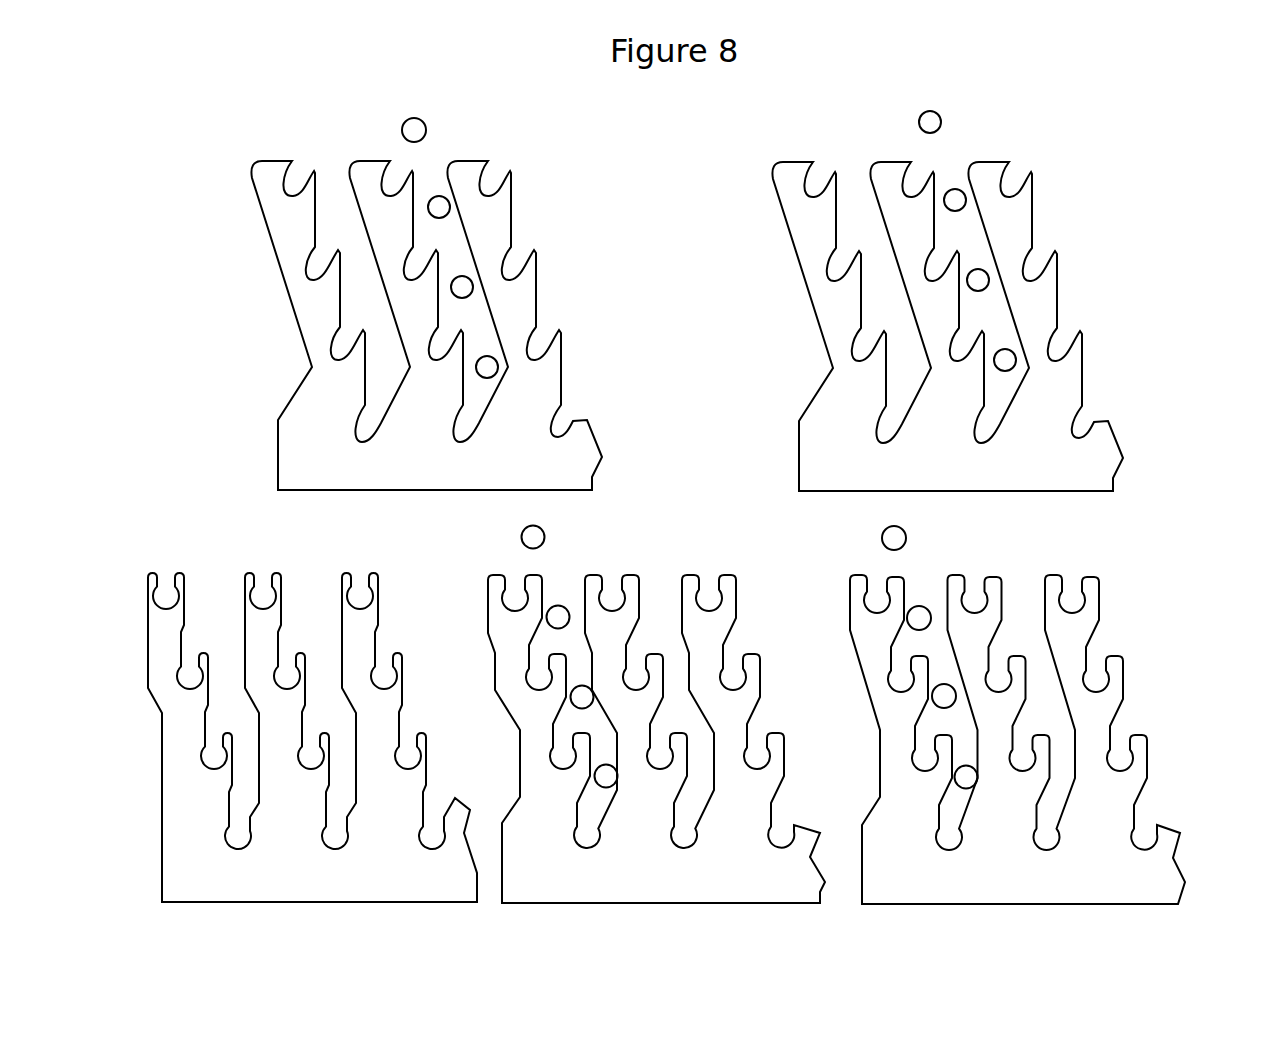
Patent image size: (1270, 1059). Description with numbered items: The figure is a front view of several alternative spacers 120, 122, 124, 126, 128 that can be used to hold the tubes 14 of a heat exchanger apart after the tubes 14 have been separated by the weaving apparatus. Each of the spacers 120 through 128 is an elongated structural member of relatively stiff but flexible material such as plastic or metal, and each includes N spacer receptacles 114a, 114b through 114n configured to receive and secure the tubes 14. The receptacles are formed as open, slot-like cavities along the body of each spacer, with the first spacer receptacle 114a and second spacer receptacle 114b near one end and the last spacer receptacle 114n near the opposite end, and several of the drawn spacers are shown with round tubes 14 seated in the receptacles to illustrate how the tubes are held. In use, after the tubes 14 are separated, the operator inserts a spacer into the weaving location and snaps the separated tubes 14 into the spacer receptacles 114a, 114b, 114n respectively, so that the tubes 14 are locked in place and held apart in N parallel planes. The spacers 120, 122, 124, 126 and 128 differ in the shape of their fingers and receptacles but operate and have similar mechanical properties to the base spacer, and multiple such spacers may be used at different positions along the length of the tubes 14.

The tubes 14 is at (413, 118).
The spacer receptacle 114a is at (488, 182).
The spacer receptacle 114b is at (513, 257).
The spacer receptacle 114n is at (562, 420).
The spacer 120 is at (265, 466).
The spacer 122 is at (780, 467).
The spacer 124 is at (276, 578).
The spacer 126 is at (632, 576).
The spacer 128 is at (992, 576).